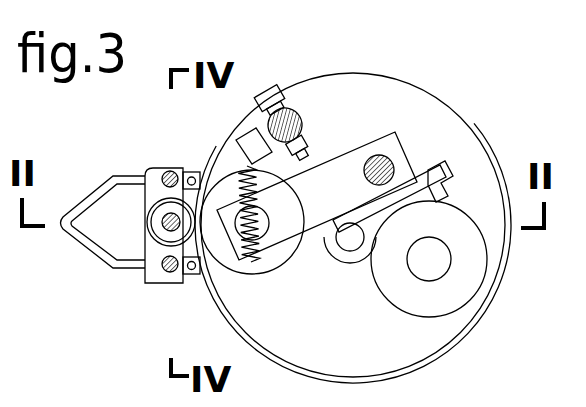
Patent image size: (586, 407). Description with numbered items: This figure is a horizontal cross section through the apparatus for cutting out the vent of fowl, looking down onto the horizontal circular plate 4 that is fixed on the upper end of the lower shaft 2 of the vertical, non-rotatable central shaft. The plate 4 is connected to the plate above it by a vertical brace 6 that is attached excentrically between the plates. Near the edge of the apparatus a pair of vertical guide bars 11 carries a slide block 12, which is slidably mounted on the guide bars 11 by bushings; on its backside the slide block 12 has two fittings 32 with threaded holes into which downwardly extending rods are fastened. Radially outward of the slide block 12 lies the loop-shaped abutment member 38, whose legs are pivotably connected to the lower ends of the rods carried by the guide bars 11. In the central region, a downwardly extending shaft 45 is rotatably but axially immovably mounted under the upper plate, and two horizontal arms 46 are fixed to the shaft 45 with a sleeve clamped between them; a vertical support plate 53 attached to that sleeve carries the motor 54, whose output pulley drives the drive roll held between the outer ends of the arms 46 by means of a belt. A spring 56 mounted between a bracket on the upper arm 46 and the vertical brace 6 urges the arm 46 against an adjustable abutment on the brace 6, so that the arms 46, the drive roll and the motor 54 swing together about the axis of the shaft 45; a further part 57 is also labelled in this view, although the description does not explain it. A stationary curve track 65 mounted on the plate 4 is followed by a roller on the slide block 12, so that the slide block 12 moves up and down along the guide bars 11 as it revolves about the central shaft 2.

The lower shaft 2 is at (350, 238).
The horizontal circular plate 4 is at (377, 80).
The vertical brace 6 is at (290, 108).
The guide bars 11 is at (168, 274).
The slide block 12 is at (155, 273).
The fittings 32 is at (190, 282).
The abutment member 38 is at (84, 247).
The shaft 45 is at (391, 161).
The horizontal arms 46 is at (392, 142).
The vertical support plate 53 is at (428, 166).
The motor 54 is at (465, 253).
The spring 56 is at (248, 170).
The housing wall 57 is at (316, 143).
The curve track 65 is at (462, 328).